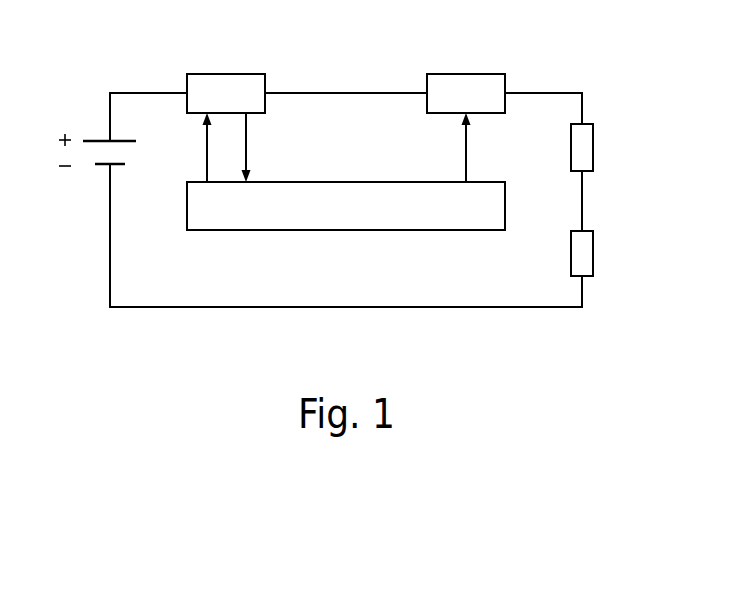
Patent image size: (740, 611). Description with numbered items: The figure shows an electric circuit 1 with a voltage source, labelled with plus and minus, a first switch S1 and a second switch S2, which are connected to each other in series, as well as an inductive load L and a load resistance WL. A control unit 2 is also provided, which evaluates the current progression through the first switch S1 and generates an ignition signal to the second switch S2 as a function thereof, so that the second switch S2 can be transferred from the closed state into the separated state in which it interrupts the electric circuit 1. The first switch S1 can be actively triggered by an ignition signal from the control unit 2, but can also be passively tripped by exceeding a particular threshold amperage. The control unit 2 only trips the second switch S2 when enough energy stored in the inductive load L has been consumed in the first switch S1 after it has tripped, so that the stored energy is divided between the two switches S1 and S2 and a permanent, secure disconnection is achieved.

The electric circuit 1 is at (559, 66).
The control unit 2 is at (346, 171).
The first switch S1 is at (226, 93).
The second switch S2 is at (466, 93).
The load resistance WL is at (606, 149).
The inductive load L is at (604, 253).